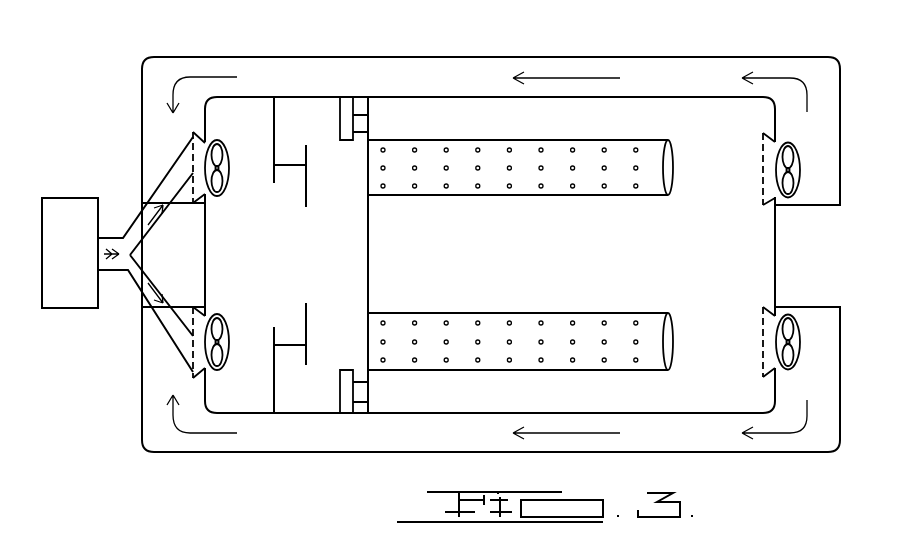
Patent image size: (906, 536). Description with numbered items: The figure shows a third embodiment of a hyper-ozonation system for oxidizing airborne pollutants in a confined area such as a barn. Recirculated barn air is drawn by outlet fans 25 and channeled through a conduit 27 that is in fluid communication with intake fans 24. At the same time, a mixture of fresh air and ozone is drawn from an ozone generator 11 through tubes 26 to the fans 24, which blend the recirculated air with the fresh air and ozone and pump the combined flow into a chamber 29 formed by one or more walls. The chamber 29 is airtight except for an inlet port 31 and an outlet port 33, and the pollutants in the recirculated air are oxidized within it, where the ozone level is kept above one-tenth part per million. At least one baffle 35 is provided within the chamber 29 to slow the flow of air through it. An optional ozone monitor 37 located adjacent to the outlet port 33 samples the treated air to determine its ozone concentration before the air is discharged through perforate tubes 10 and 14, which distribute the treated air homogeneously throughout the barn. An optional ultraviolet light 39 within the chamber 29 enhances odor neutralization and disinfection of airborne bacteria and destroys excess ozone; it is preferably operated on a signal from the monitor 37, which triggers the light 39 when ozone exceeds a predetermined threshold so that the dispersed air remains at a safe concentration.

The perforate tube 10 is at (527, 188).
The ozone generator 11 is at (65, 308).
The perforate tube 14 is at (617, 318).
The intake fan 24 is at (227, 157).
The outlet fan 25 is at (783, 158).
The tube 26 is at (128, 254).
The conduit 27 is at (700, 78).
The chamber 29 is at (352, 306).
The inlet port 31 is at (193, 178).
The outlet port 33 is at (368, 183).
The baffle 35 is at (274, 150).
The ozone monitor 37 is at (340, 121).
The ultraviolet light 39 is at (360, 112).